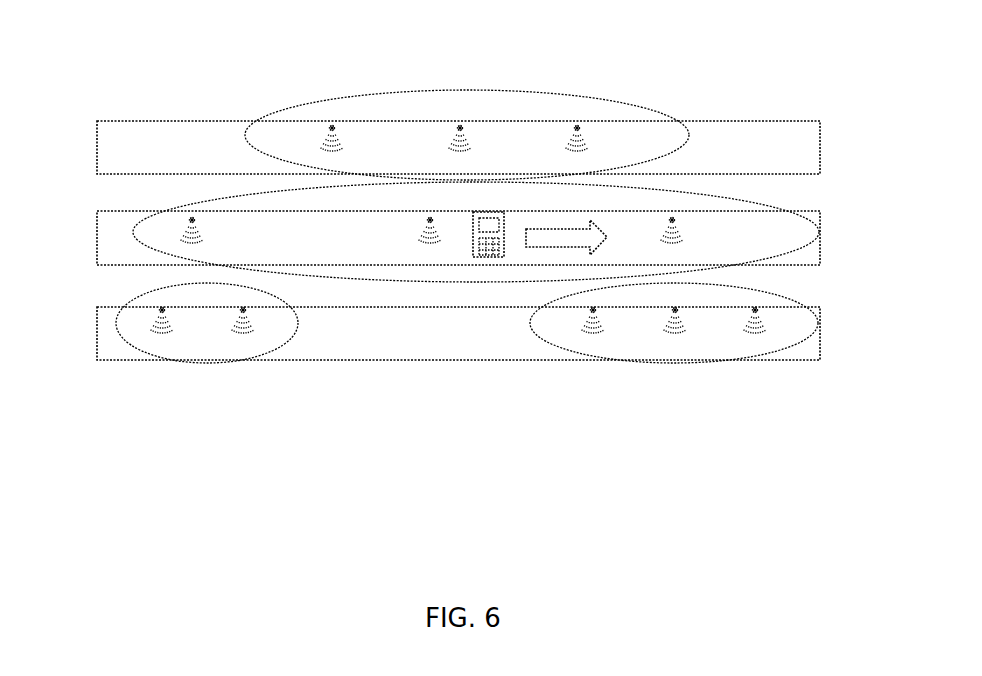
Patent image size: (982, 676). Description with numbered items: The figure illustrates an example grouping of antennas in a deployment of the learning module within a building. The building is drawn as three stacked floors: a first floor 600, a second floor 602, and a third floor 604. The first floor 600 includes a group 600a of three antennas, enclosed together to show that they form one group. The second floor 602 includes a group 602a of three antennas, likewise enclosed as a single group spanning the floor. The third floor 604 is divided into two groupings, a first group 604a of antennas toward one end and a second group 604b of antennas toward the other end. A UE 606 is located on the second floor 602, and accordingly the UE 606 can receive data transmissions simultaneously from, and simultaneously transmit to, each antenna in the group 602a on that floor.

The first floor 600 is at (97, 136).
The group of three antennas 600a is at (410, 88).
The second floor 602 is at (97, 253).
The group of three antennas 602a is at (820, 232).
The third floor 604 is at (97, 347).
The first group 604a is at (180, 360).
The second group 604b is at (673, 360).
The UE 606 is at (482, 262).